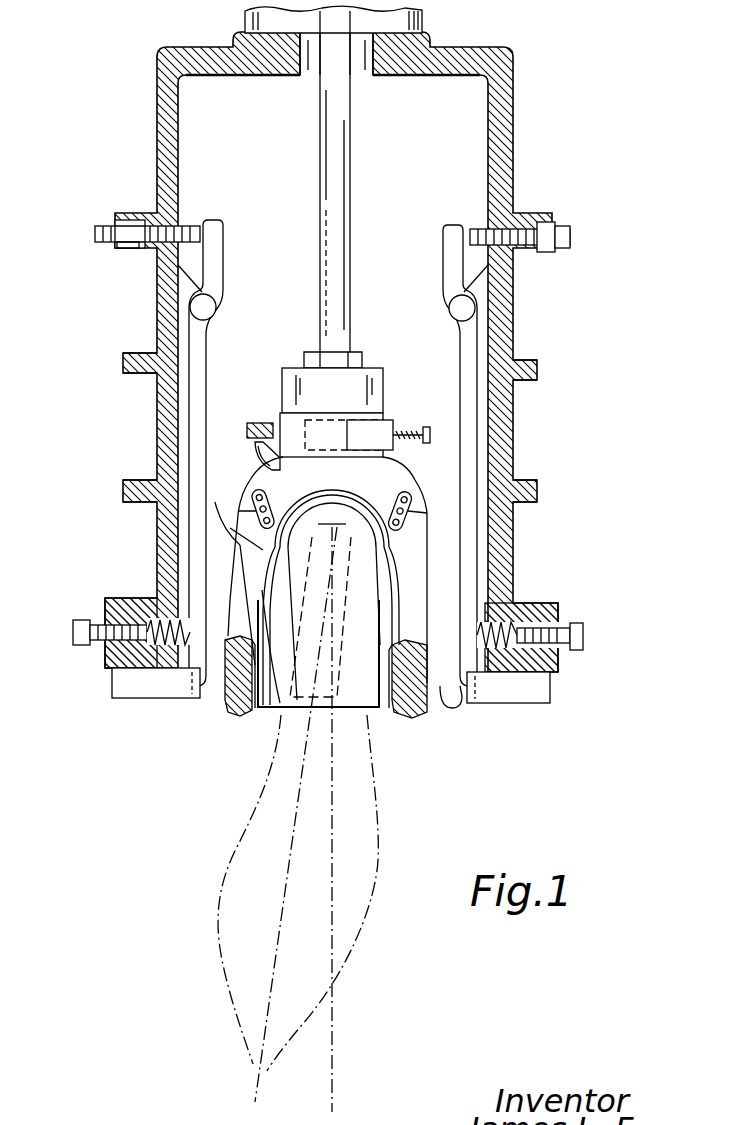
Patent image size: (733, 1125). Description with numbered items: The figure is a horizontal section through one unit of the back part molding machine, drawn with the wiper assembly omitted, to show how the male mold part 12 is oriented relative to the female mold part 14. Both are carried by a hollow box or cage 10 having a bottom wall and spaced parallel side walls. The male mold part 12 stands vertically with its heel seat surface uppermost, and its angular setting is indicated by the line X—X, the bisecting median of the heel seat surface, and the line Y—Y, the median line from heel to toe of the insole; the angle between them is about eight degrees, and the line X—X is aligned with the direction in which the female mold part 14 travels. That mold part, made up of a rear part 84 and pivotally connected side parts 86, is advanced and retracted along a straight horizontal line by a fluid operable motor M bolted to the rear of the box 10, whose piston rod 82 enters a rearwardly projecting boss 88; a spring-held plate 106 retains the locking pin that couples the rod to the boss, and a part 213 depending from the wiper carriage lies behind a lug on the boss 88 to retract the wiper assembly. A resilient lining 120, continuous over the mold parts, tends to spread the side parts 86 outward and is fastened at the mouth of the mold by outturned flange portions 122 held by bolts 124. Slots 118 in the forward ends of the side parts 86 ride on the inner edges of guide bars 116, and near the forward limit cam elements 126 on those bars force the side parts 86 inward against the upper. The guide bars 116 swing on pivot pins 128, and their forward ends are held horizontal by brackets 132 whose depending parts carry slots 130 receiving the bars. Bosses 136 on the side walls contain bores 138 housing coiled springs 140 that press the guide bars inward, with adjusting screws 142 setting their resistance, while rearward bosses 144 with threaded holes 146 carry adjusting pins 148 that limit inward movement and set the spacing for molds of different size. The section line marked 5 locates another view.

The hollow box or cage 10 is at (523, 162).
The fluid operable motor M is at (430, 22).
The piston rod 82 is at (345, 314).
The bosses 144 is at (135, 218).
The threaded holes 146 is at (140, 252).
The adjusting pins 148 is at (95, 235).
The plate 106 is at (155, 333).
The guide bars 116 is at (196, 377).
The pivot pins 128 is at (458, 315).
The boss 88 is at (383, 419).
The part depending from the carriage 213 is at (256, 420).
The section line / bottle 5 is at (231, 434).
The rear part 84 is at (327, 581).
The side parts 86 is at (413, 608).
The female mold part 14 is at (438, 485).
The resilient lining 120 is at (234, 517).
The line X— X is at (288, 821).
The line Y— Y is at (339, 821).
The male mold part 12 is at (298, 804).
The cam elements 126 is at (205, 742).
The outturned flange portions 122 is at (246, 714).
The bolts 124 is at (408, 716).
The slots 118 is at (436, 710).
The bosses 136 is at (112, 598).
The bores 138 is at (128, 597).
The coiled springs 140 is at (156, 683).
The adjusting screws 142 is at (105, 672).
The slots 130 is at (478, 710).
The brackets 132 is at (556, 716).